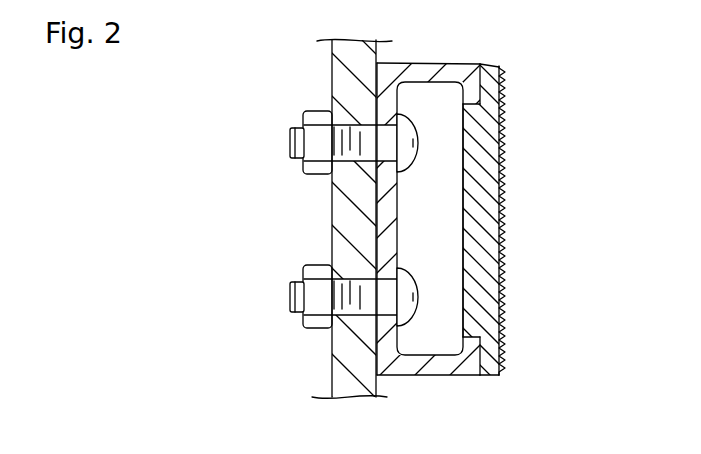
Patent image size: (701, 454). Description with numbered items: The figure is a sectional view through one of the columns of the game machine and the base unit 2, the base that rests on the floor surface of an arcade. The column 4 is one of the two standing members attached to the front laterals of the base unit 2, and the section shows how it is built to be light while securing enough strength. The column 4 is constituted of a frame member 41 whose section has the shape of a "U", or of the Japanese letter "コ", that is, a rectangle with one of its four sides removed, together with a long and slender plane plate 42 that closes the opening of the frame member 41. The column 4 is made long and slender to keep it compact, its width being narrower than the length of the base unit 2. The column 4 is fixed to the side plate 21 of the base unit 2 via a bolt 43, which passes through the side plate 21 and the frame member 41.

The mounting structure 2 is at (236, 80).
The support plate 21 is at (342, 78).
The rail member 4 is at (536, 224).
The holder bracket 41 is at (457, 70).
The rail body 42 is at (485, 165).
The engaging step portion 43 is at (472, 119).